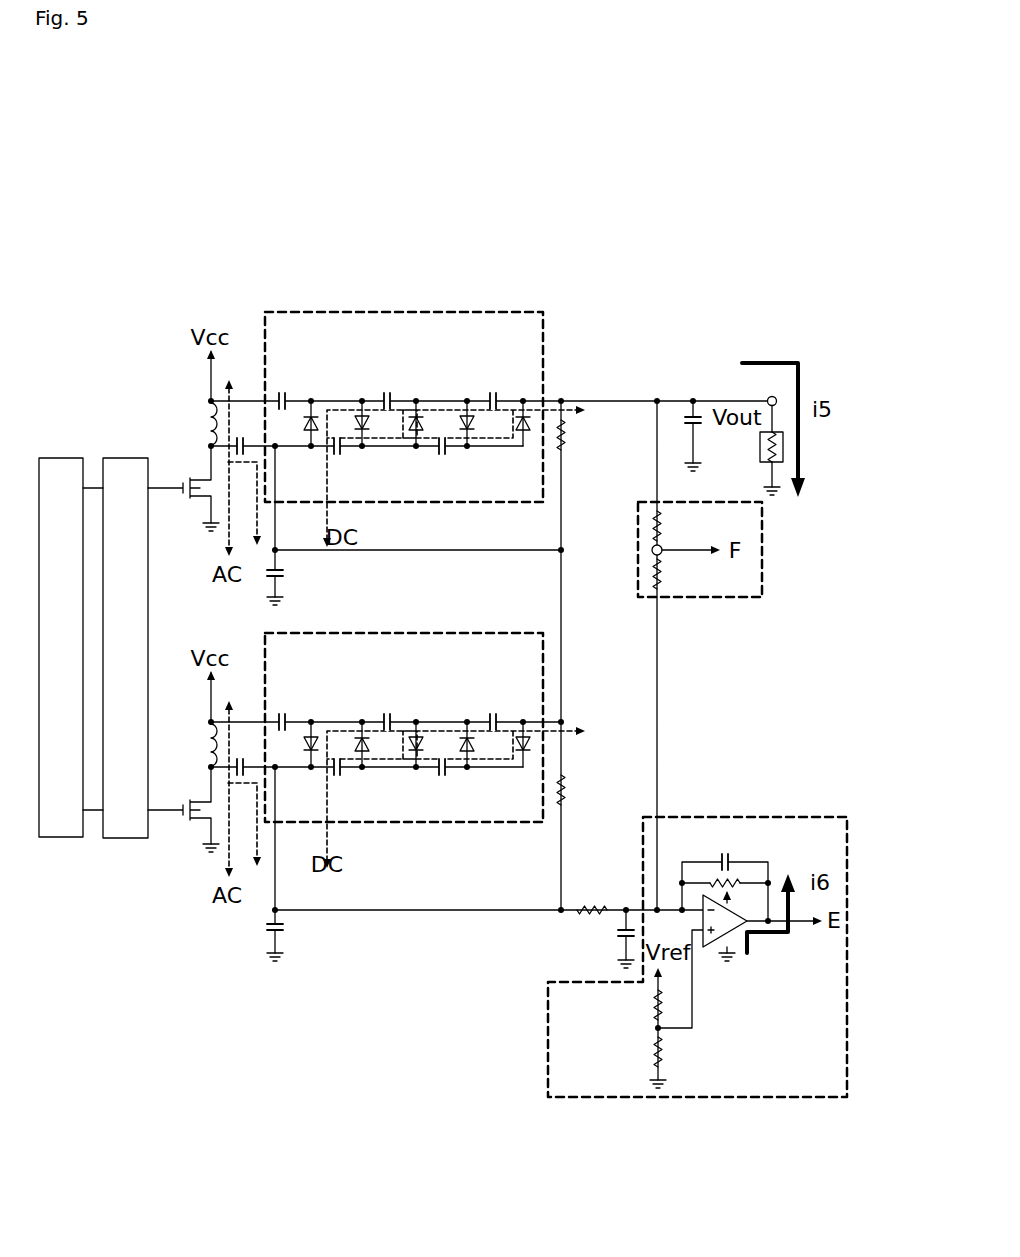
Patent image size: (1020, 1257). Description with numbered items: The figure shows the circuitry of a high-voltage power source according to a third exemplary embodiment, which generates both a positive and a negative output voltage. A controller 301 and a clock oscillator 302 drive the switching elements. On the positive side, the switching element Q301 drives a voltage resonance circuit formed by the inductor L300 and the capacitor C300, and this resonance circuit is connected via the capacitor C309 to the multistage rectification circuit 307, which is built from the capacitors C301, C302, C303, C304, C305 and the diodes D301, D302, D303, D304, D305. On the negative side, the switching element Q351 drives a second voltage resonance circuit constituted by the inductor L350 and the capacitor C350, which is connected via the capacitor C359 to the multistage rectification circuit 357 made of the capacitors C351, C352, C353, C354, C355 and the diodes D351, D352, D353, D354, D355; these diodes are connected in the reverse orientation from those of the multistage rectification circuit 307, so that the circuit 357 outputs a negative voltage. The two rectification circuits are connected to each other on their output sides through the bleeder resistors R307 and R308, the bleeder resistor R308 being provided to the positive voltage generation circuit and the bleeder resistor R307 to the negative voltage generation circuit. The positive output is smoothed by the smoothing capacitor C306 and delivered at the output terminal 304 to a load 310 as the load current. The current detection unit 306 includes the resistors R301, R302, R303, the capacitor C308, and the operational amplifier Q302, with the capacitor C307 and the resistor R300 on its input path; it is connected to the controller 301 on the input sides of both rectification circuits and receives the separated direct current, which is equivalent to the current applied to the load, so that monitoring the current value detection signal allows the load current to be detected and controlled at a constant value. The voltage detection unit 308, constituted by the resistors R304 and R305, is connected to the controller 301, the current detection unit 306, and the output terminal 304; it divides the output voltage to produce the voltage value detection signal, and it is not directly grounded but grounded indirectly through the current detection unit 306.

The controller 301 is at (60, 458).
The clock oscillator 302 is at (123, 458).
The output terminal 304 is at (727, 387).
The current detection unit 306 is at (727, 813).
The multistage rectification circuit 307 is at (430, 312).
The voltage detection unit 308 is at (713, 598).
The load 310 is at (760, 450).
The multistage rectification circuit 357 is at (430, 630).
The inductor L300 is at (207, 418).
The inductor L350 is at (207, 739).
The capacitor C309 is at (234, 450).
The capacitor C359 is at (236, 767).
The switching element Q301 is at (195, 501).
The switching element Q351 is at (195, 821).
The capacitor C300 is at (284, 573).
The capacitor C350 is at (284, 927).
The capacitor C301 is at (285, 391).
The capacitor C302 is at (340, 454).
The capacitor C303 is at (387, 391).
The capacitor C304 is at (445, 454).
The capacitor C305 is at (495, 391).
The capacitor C351 is at (285, 712).
The capacitor C352 is at (340, 776).
The capacitor C353 is at (387, 712).
The capacitor C354 is at (445, 775).
The capacitor C355 is at (495, 712).
The diode D301 is at (309, 441).
The diode D302 is at (360, 408).
The diode D303 is at (410, 439).
The diode D304 is at (466, 408).
The diode D305 is at (521, 441).
The diode D351 is at (309, 763).
The diode D352 is at (360, 729).
The diode D353 is at (410, 761).
The diode D354 is at (466, 729).
The diode D355 is at (521, 763).
The bleeder resistor R308 is at (568, 435).
The bleeder resistor R307 is at (566, 789).
The resistor R305 is at (664, 523).
The resistor R304 is at (664, 575).
The resistor R300 is at (592, 904).
The resistor R301 is at (712, 878).
The resistor R302 is at (652, 1005).
The resistor R303 is at (652, 1050).
The smoothing capacitor C306 is at (690, 411).
The capacitor C307 is at (616, 935).
The capacitor C308 is at (734, 860).
The operational amplifier Q302 is at (706, 951).